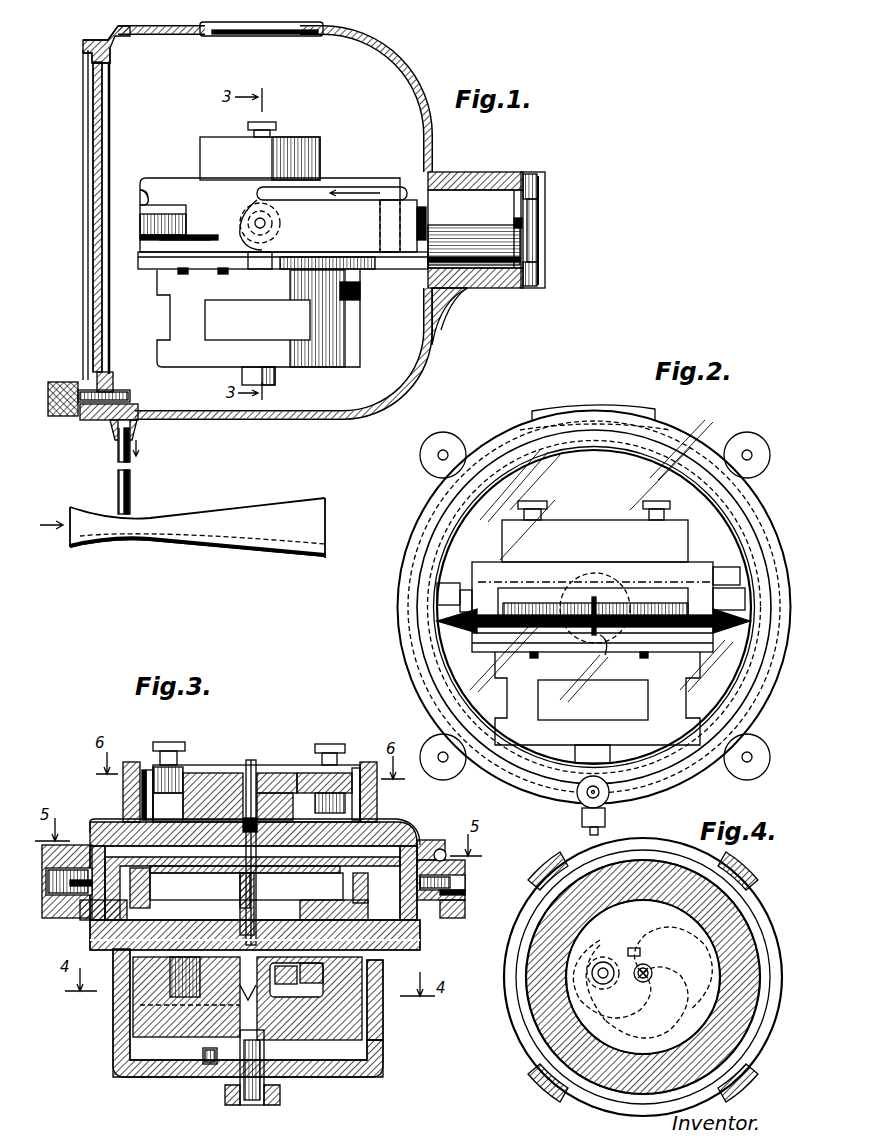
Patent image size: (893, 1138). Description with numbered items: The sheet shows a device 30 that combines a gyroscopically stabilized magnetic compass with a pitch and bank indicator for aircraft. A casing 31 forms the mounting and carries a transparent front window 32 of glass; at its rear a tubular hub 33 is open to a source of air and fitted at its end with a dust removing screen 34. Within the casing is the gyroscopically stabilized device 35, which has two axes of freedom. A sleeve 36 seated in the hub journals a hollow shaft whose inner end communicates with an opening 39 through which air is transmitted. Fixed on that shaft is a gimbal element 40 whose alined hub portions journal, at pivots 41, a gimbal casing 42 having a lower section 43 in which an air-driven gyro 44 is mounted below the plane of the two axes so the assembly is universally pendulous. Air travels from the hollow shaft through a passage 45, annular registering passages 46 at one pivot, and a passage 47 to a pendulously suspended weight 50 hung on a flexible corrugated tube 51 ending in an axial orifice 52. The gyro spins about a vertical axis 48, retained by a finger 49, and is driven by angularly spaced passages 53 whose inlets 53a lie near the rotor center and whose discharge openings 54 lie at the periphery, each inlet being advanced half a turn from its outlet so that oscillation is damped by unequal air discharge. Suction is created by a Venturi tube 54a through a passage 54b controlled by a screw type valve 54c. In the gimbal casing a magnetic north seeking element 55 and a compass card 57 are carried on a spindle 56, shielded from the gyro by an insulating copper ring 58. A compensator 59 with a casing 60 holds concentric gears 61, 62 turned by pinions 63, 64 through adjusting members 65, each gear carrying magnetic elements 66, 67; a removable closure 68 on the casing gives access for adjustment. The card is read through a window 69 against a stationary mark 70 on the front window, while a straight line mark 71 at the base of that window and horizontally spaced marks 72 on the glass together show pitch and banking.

In FIG. 1, the device 30 is at (70, 36).
In FIG. 1, the casing 31 is at (420, 85).
In FIG. 2, the casing 31 is at (584, 607).
In FIG. 1, the front window 32 is at (93, 122).
In FIG. 2, the front window 32 is at (470, 531).
In FIG. 1, the hub 33 is at (490, 174).
In FIG. 1, the screen 34 is at (545, 255).
In FIG. 1, the gyroscopically stabilized device 35 is at (192, 156).
In FIG. 1, the sleeve 36 is at (467, 289).
In FIG. 2, the sleeve 36 is at (595, 580).
In FIG. 1, the opening 39 is at (524, 228).
In FIG. 1, the gimbal element 40 is at (380, 246).
In FIG. 2, the gimbal element 40 is at (440, 592).
In FIG. 1, the pivots 41 is at (268, 223).
In FIG. 3, the pivots 41 is at (55, 918).
In FIG. 1, the gimbal casing 42 is at (166, 178).
In FIG. 2, the gimbal casing 42 is at (704, 562).
In FIG. 3, the gimbal casing 42 is at (97, 828).
In FIG. 1, the lower section 43 is at (157, 288).
In FIG. 2, the lower section 43 is at (698, 680).
In FIG. 3, the lower section 43 is at (113, 1046).
In FIG. 4, the lower section 43 is at (545, 875).
In FIG. 3, the gyro 44 is at (370, 1020).
In FIG. 4, the gyro 44 is at (530, 1020).
In FIG. 3, the passage 45 is at (433, 840).
In FIG. 3, the annular registering passages 46 is at (436, 915).
In FIG. 3, the passage 47 is at (395, 945).
In FIG. 3, the vertical axis 48 is at (245, 1105).
In FIG. 3, the finger 49 is at (203, 1058).
In FIG. 4, the finger 49 is at (638, 948).
In FIG. 3, the weight 50 is at (302, 972).
In FIG. 3, the corrugated tube 51 is at (260, 925).
In FIG. 3, the axial orifice 52 is at (290, 985).
In FIG. 3, the passages 53 is at (172, 1010).
In FIG. 4, the passages 53 is at (672, 1000).
In FIG. 4, the inlets 53a is at (652, 973).
In FIG. 4, the discharge openings 54 is at (625, 860).
In FIG. 1, the Venturi tube 54a is at (198, 512).
In FIG. 1, the passage 54b is at (110, 432).
In FIG. 1, the screw type valve 54c is at (132, 395).
In FIG. 2, the screw type valve 54c is at (583, 800).
In FIG. 3, the magnetic north seeking element 55 is at (330, 880).
In FIG. 3, the spindle 56 is at (270, 878).
In FIG. 3, the compass card 57 is at (183, 860).
In FIG. 3, the insulating means 58 is at (100, 925).
In FIG. 1, the compensator 59 is at (318, 137).
In FIG. 2, the compensator 59 is at (598, 520).
In FIG. 3, the compensator 59 is at (203, 752).
In FIG. 3, the compensator casing 60 is at (378, 790).
In FIG. 3, the gear 61 is at (222, 780).
In FIG. 3, the gear 62 is at (290, 785).
In FIG. 3, the pinion 63 is at (147, 772).
In FIG. 3, the pinion 64 is at (360, 810).
In FIG. 3, the adjusting members 65 is at (168, 742).
In FIG. 3, the magnetic element 66 is at (262, 793).
In FIG. 3, the magnetic element 67 is at (280, 793).
In FIG. 1, the removable closure 68 is at (300, 36).
In FIG. 2, the removable closure 68 is at (657, 413).
In FIG. 1, the window 69 is at (140, 188).
In FIG. 1, the stationary mark 70 is at (100, 222).
In FIG. 2, the stationary mark 70 is at (618, 645).
In FIG. 1, the straight line mark 71 is at (198, 234).
In FIG. 2, the straight line mark 71 is at (664, 643).
In FIG. 2, the spaced marks 72 is at (420, 648).